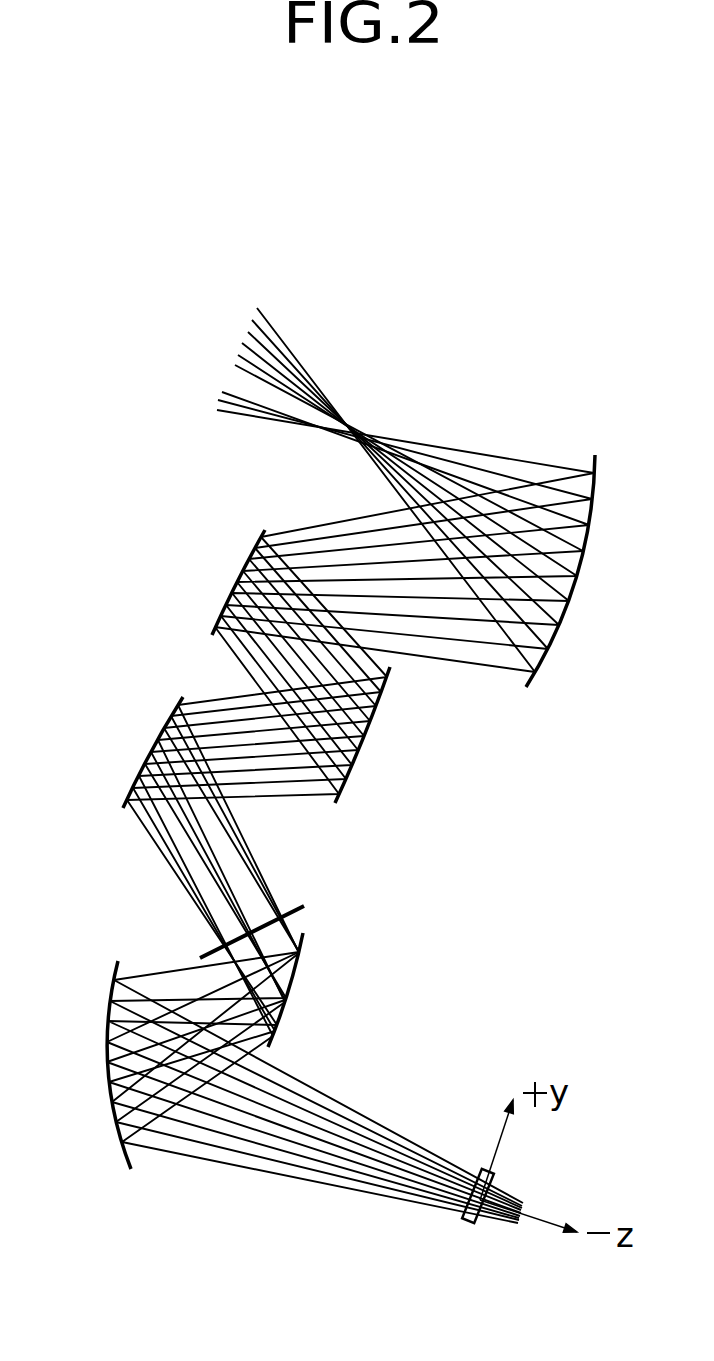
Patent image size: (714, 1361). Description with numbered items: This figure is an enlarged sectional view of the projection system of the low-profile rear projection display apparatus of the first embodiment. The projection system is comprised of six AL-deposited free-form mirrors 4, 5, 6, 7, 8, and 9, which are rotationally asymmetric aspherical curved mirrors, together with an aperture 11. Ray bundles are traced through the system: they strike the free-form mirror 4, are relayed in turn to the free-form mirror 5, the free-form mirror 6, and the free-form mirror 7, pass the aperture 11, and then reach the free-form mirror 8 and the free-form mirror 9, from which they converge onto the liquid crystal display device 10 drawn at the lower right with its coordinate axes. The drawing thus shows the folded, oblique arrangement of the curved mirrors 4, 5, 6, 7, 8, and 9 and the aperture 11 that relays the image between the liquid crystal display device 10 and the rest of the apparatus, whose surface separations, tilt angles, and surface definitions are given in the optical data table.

The free-form mirror 4 is at (578, 580).
The free-form mirror 5 is at (238, 588).
The free-form mirror 6 is at (363, 728).
The free-form mirror 7 is at (152, 758).
The free-form mirror 8 is at (287, 990).
The free-form mirror 9 is at (110, 1067).
The liquid crystal display device 10 is at (463, 1222).
The aperture 11 is at (304, 906).